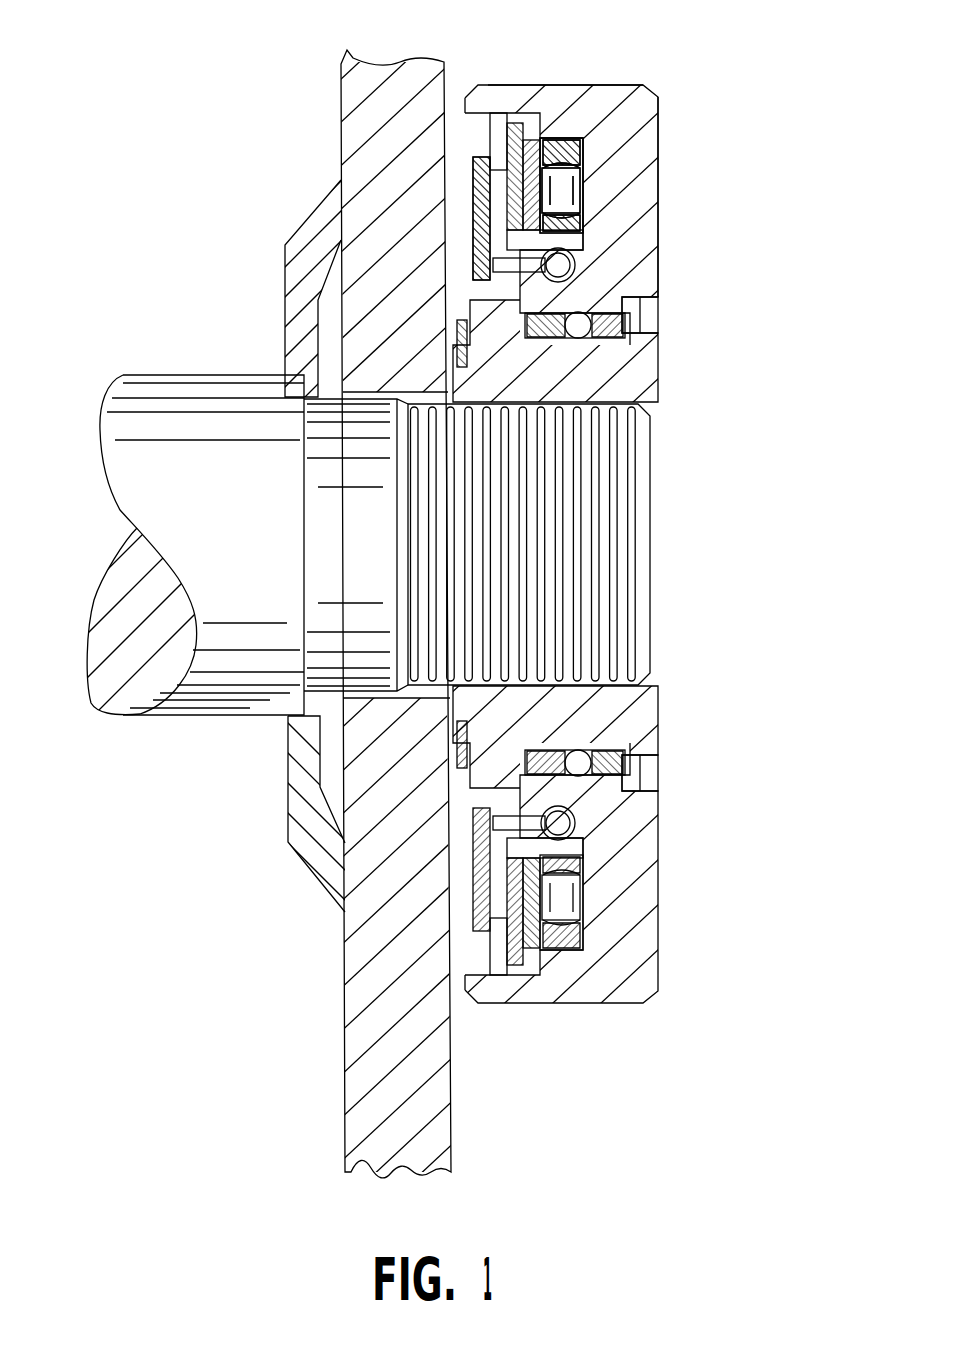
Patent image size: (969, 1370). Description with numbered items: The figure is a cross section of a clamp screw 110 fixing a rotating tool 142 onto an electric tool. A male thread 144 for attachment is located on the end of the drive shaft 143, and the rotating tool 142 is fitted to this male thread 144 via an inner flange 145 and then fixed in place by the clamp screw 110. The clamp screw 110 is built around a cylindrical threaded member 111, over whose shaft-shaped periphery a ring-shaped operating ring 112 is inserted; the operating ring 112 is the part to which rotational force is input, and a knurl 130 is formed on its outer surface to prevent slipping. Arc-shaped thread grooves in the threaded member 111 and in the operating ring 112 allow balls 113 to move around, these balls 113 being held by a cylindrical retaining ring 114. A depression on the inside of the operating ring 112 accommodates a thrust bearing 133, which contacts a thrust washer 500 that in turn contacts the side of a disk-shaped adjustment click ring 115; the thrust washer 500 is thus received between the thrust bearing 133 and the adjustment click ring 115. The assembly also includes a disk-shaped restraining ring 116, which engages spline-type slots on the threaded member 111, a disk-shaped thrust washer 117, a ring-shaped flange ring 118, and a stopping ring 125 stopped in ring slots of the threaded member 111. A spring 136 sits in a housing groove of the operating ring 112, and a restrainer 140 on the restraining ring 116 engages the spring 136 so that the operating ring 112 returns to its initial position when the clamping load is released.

The clamp screw 110 is at (700, 85).
The threaded member 111 is at (645, 368).
The operating ring 112 is at (658, 181).
The balls 113 is at (600, 290).
The retaining ring 114 is at (643, 334).
The adjustment click ring 115 is at (556, 96).
The restraining ring 116 is at (482, 213).
The thrust washer 117 is at (482, 228).
The flange ring 118 is at (292, 242).
The stopping ring 125 is at (482, 740).
The knurl 130 is at (488, 84).
The thrust bearing 133 is at (565, 148).
The spring 136 is at (590, 262).
The restrainer 140 is at (480, 112).
The rotating tool 142 is at (342, 58).
The drive shaft 143 is at (137, 493).
The male thread 144 is at (605, 549).
The inner flange 145 is at (285, 324).
The thrust washer 500 is at (540, 150).